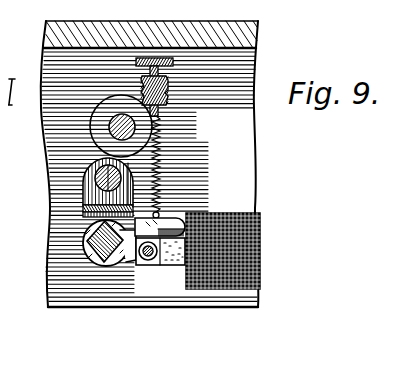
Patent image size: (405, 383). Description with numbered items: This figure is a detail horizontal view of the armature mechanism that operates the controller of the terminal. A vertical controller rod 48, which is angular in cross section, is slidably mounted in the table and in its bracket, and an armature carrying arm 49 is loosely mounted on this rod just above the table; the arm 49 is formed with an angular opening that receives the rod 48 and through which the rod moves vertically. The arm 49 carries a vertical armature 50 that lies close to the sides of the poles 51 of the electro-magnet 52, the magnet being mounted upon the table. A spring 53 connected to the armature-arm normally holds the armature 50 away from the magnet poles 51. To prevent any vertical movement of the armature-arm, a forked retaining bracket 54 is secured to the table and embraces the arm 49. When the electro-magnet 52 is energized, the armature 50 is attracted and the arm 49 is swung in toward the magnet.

The vertical controller rod 48 is at (82, 230).
The armature carrying arm 49 is at (73, 259).
The armature 50 is at (162, 225).
The poles 51 is at (168, 250).
The electro-magnet 52 is at (250, 234).
The spring 53 is at (158, 130).
The forked retaining bracket 54 is at (113, 172).